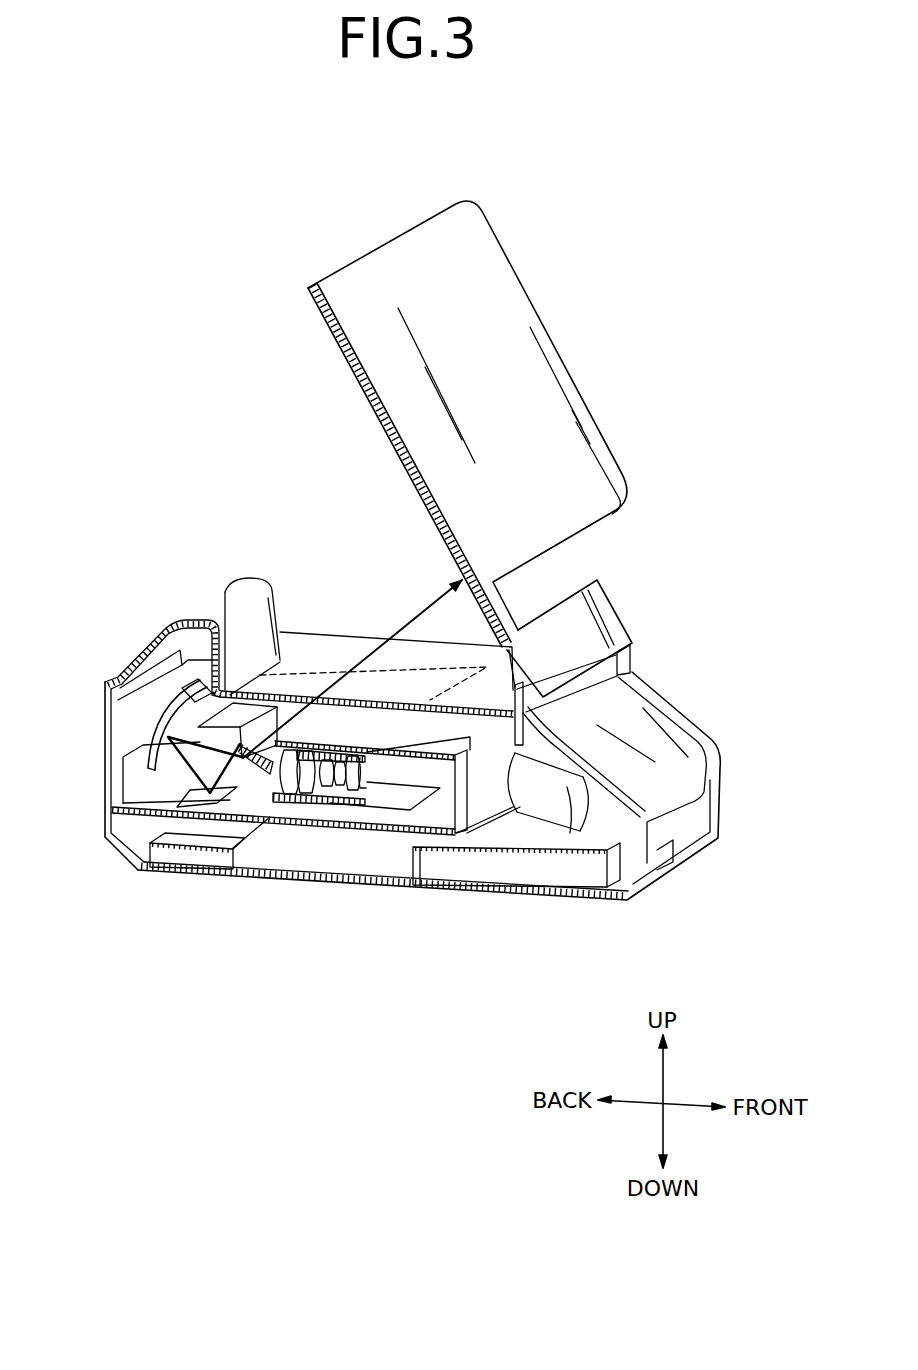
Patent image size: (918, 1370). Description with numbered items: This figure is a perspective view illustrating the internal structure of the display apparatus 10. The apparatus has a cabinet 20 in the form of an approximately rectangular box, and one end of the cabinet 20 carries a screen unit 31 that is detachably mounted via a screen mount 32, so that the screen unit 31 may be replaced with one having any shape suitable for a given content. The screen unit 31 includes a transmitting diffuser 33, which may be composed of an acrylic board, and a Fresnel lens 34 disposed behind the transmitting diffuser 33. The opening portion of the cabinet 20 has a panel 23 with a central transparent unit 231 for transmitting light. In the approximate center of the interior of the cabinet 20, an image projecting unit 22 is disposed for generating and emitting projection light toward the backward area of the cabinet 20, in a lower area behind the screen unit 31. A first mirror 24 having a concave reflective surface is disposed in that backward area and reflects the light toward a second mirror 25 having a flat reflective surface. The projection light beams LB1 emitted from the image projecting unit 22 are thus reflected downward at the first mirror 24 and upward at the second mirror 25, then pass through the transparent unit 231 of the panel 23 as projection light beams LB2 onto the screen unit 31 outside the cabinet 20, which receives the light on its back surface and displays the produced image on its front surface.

The display apparatus 10 is at (580, 232).
The screen unit 31 is at (557, 322).
The transmitting diffuser 33 is at (383, 267).
The Fresnel lens 34 is at (313, 297).
The screen mount 32 is at (605, 620).
The cabinet 20 is at (693, 710).
The panel 23 is at (348, 648).
The transparent unit 231 is at (417, 662).
The first mirror 24 is at (173, 722).
The second mirror 25 is at (140, 813).
The image projecting unit 22 is at (332, 810).
The projection light beams LB1 is at (260, 767).
The projection light beams LB2 is at (322, 697).